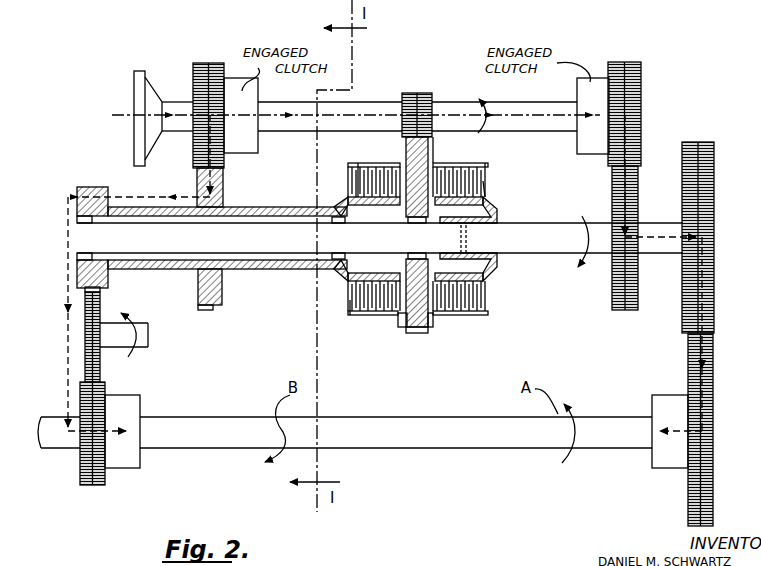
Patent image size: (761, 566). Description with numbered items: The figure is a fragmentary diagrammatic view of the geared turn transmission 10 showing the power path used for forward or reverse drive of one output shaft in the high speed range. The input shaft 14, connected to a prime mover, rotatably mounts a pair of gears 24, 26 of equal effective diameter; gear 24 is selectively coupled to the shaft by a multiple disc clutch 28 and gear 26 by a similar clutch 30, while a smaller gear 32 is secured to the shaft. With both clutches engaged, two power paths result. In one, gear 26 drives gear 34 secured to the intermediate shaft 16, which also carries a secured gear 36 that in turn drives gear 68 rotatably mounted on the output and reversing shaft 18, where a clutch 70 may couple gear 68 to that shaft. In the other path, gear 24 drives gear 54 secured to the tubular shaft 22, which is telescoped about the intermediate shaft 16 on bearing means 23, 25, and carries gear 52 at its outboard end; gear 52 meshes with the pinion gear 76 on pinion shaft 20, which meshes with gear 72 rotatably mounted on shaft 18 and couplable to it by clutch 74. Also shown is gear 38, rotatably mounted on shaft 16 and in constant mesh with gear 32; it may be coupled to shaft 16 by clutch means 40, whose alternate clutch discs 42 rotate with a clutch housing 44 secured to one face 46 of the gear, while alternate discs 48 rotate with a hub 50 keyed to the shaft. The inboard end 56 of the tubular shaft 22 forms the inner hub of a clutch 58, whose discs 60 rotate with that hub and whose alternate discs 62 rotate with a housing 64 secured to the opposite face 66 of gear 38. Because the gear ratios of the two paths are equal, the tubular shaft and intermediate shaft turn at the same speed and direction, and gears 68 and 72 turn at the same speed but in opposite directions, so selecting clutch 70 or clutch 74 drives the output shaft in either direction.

The geared turn transmission 10 is at (118, 96).
The input shaft 14 is at (376, 101).
The intermediate shaft 16 is at (531, 247).
The output and reversing shaft 18 is at (393, 438).
The pinion shaft 20 is at (148, 330).
The tubular shaft 22 is at (277, 272).
The bearing means 23 is at (341, 224).
The gear 24 is at (209, 63).
The bearing means 25 is at (78, 220).
The gear 26 is at (630, 63).
The clutch 28 is at (248, 143).
The clutch 30 is at (597, 80).
The gear 32 is at (420, 93).
The gear 34 is at (640, 202).
The gear 36 is at (715, 202).
The gear 38 is at (418, 335).
The clutch means 40 is at (472, 319).
The clutch disc 42 is at (485, 168).
The clutch housing 44 is at (462, 160).
The face 46 is at (431, 165).
The clutch disc 48 is at (486, 185).
The hub 50 is at (494, 212).
The gear 52 is at (97, 187).
The gear 54 is at (218, 310).
The inboard end 56 is at (403, 300).
The clutch 58 is at (342, 181).
The clutch disc 60 is at (351, 295).
The clutch disc 62 is at (350, 315).
The housing 64 is at (357, 163).
The face 66 is at (405, 336).
The gear 68 is at (688, 510).
The clutch 70 is at (657, 460).
The gear 72 is at (103, 485).
The clutch 74 is at (140, 460).
The gear 76 is at (85, 333).